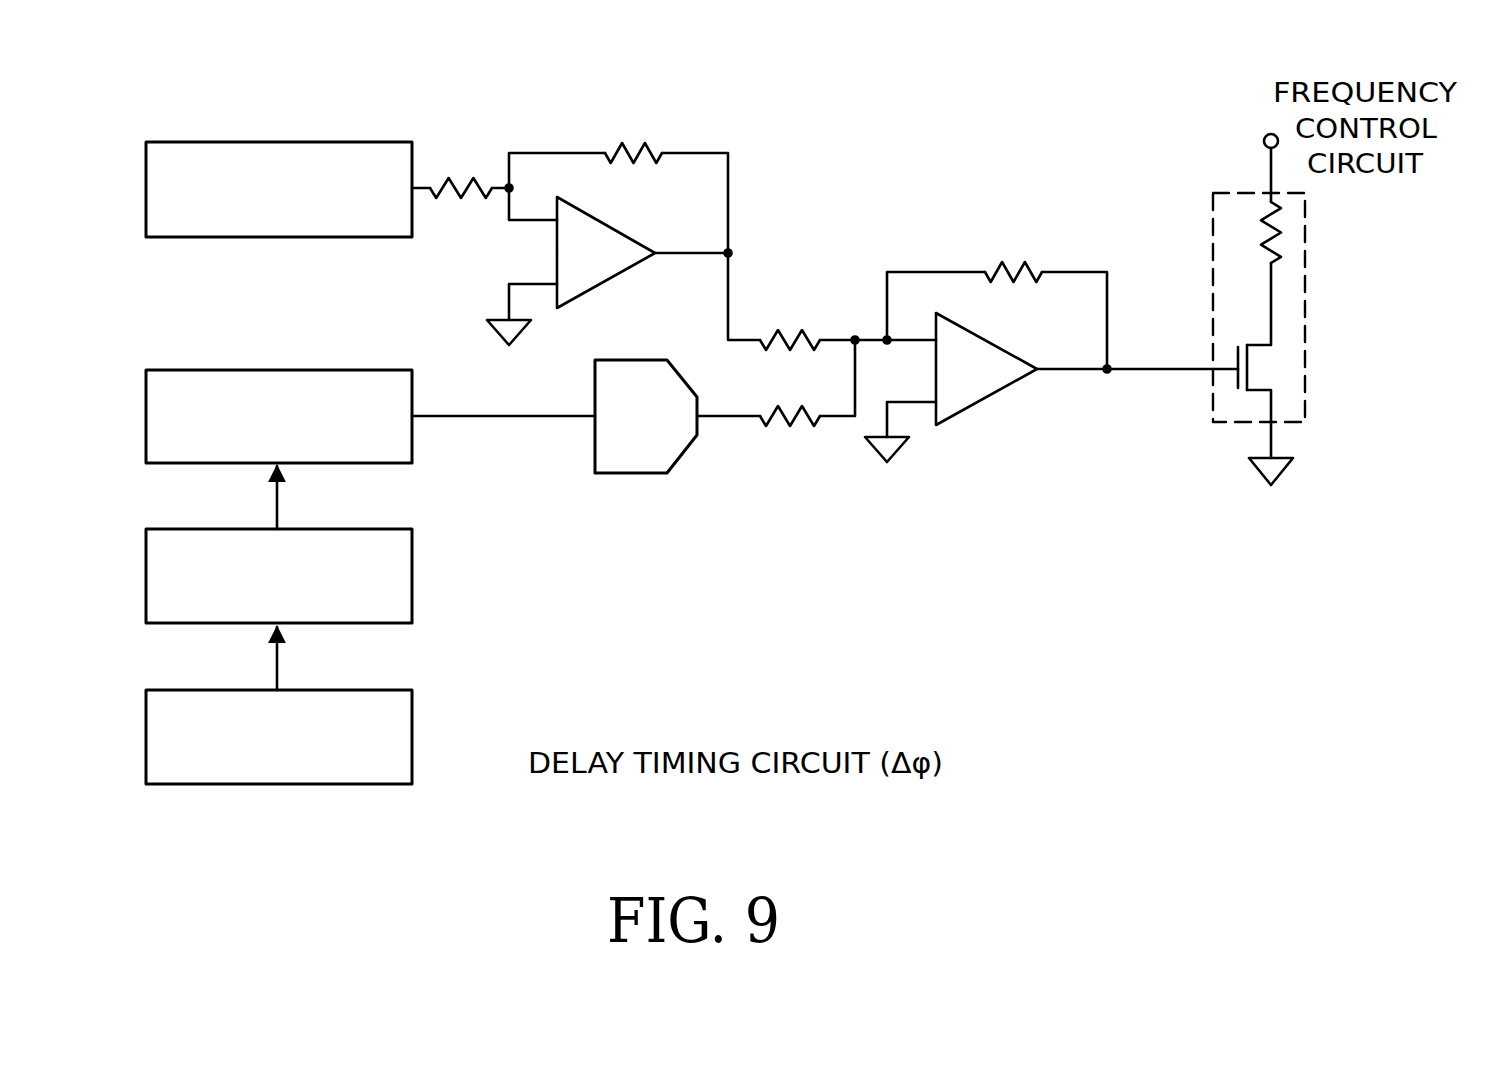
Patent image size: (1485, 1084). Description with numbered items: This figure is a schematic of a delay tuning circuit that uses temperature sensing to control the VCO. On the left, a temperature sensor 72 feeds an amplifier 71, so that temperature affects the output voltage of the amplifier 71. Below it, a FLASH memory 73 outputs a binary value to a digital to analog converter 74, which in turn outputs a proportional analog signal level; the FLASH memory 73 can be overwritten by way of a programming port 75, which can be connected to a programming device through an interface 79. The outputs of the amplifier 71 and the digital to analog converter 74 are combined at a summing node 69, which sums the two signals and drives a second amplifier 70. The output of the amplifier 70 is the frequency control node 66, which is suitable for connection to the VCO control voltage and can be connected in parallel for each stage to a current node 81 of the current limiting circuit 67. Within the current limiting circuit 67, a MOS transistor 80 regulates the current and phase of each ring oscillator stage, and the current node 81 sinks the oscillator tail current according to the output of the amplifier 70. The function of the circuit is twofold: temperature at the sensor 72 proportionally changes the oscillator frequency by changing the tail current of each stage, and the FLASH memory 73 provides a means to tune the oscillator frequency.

The frequency control node 66 is at (1104, 380).
The current limiting circuit 67 is at (1305, 353).
The summing node 69 is at (852, 332).
The amplifier 70 is at (997, 345).
The amplifier 71 is at (617, 228).
The temperature sensor 72 is at (197, 150).
The FLASH memory 73 is at (197, 378).
The digital to analog converter 74 is at (618, 362).
The programming port 75 is at (197, 536).
The interface 79 is at (197, 695).
The MOS transistor 80 is at (1233, 352).
The current node 81 is at (1263, 141).